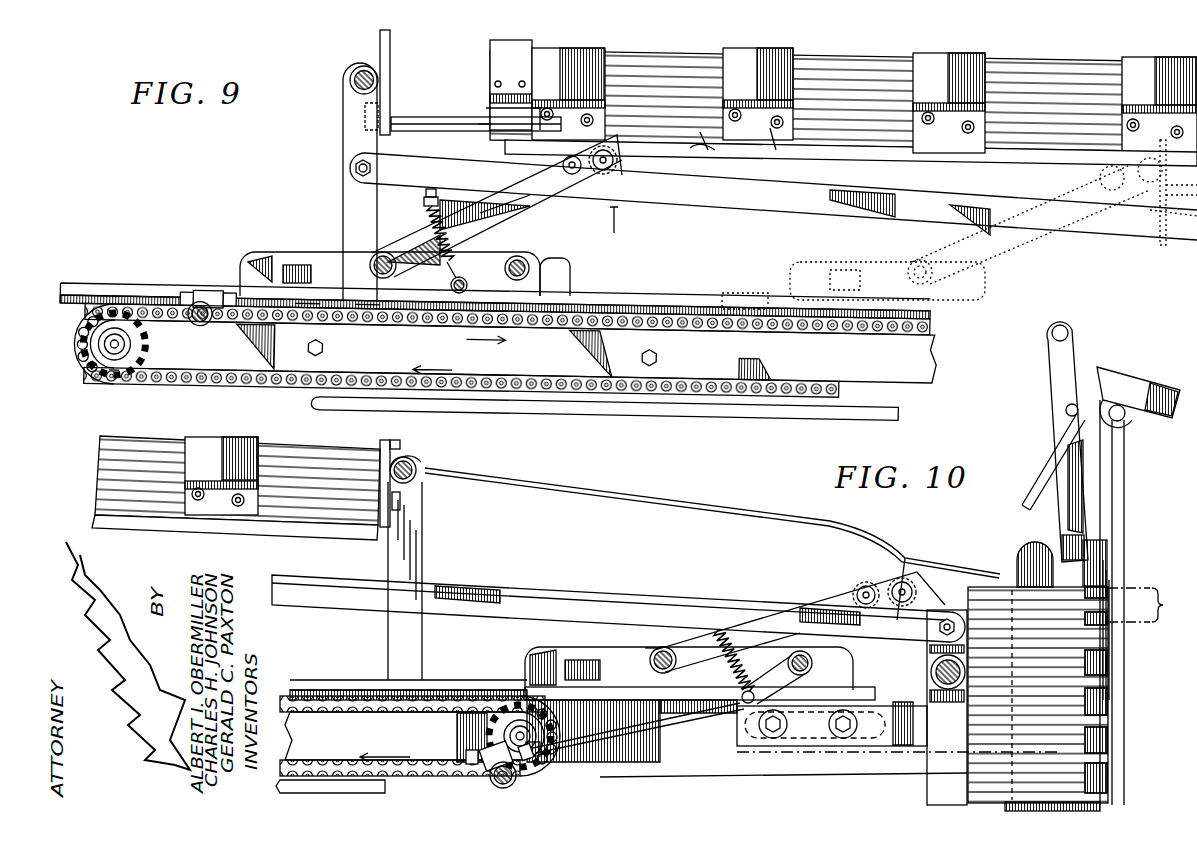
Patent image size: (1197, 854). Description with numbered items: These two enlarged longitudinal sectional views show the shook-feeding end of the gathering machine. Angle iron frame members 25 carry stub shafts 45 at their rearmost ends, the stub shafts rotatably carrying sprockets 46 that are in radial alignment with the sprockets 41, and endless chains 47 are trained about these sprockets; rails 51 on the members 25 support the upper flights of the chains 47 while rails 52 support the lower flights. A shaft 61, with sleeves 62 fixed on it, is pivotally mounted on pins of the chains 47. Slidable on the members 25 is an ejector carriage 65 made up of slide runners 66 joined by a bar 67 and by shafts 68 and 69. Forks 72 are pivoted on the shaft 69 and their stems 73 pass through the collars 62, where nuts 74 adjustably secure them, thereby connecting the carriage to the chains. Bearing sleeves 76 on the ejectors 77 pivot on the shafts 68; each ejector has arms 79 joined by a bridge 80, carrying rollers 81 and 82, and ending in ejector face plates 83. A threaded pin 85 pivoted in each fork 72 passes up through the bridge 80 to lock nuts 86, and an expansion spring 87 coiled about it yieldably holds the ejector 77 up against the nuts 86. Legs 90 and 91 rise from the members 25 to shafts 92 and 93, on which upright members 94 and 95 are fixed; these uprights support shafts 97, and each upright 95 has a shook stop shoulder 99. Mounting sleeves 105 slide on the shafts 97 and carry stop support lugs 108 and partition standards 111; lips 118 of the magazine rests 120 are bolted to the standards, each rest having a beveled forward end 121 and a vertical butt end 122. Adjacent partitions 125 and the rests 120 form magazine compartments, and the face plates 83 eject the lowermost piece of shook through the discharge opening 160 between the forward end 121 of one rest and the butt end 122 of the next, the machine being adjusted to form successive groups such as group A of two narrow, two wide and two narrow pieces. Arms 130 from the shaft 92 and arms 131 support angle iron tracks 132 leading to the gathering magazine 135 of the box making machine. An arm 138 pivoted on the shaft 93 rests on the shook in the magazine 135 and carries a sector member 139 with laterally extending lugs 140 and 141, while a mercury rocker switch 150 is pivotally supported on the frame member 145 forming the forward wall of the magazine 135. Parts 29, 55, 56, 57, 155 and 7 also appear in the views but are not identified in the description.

In FIG. 9, the angle iron frame members 25 is at (650, 297).
In FIG. 10, the angle iron frame members 25 is at (645, 774).
In FIG. 10, the pivot shaft 29 is at (930, 672).
In FIG. 10, the sprockets 41 is at (512, 722).
In FIG. 9, the stub shafts 45 is at (117, 330).
In FIG. 9, the sprockets 46 is at (117, 370).
In FIG. 10, the endless chains 47 is at (443, 700).
In FIG. 9, the rails 51 is at (895, 344).
In FIG. 10, the rails 51 is at (312, 720).
In FIG. 9, the rails 52 is at (898, 400).
In FIG. 10, the rails 52 is at (362, 788).
In FIG. 10, the mounting plate 55 is at (896, 743).
In FIG. 10, the bolt 56 is at (770, 740).
In FIG. 10, the bolt 57 is at (803, 730).
In FIG. 9, the shaft 61 is at (205, 326).
In FIG. 10, the shaft 61 is at (506, 789).
In FIG. 9, the sleeves 62 is at (211, 289).
In FIG. 10, the sleeves 62 is at (485, 752).
In FIG. 9, the ejector carriage 65 is at (276, 242).
In FIG. 10, the ejector carriage 65 is at (519, 643).
In FIG. 9, the slide runners 66 is at (572, 276).
In FIG. 9, the bar 67 is at (298, 264).
In FIG. 10, the bar 67 is at (578, 659).
In FIG. 9, the shafts 68 is at (367, 302).
In FIG. 10, the shafts 68 is at (665, 647).
In FIG. 9, the shaft 69 is at (532, 270).
In FIG. 10, the shaft 69 is at (813, 662).
In FIG. 9, the forks 72 is at (304, 302).
In FIG. 10, the forks 72 is at (700, 702).
In FIG. 9, the stems 73 is at (343, 298).
In FIG. 10, the stems 73 is at (668, 714).
In FIG. 9, the nuts 74 is at (185, 290).
In FIG. 10, the nuts 74 is at (480, 768).
In FIG. 9, the bearing sleeves 76 is at (374, 258).
In FIG. 10, the bearing sleeves 76 is at (655, 651).
In FIG. 9, the ejectors 77 is at (527, 220).
In FIG. 10, the ejectors 77 is at (846, 585).
In FIG. 9, the arms 79 is at (512, 203).
In FIG. 9, the bridge 80 is at (432, 220).
In FIG. 9, the rollers 81 is at (565, 169).
In FIG. 10, the rollers 81 is at (866, 586).
In FIG. 9, the rollers 82 is at (589, 153).
In FIG. 10, the rollers 82 is at (904, 581).
In FIG. 9, the ejector face plate 83 is at (616, 222).
In FIG. 10, the ejector face plate 83 is at (925, 570).
In FIG. 9, the threaded pin 85 is at (433, 196).
In FIG. 10, the threaded pin 85 is at (717, 643).
In FIG. 9, the lock nuts 86 is at (424, 203).
In FIG. 9, the expansion spring 87 is at (463, 280).
In FIG. 10, the expansion spring 87 is at (757, 652).
In FIG. 9, the legs 90 is at (343, 127).
In FIG. 10, the legs 91 is at (416, 556).
In FIG. 9, the shaft 92 is at (351, 77).
In FIG. 10, the shaft 93 is at (418, 466).
In FIG. 9, the upright members 94 is at (380, 43).
In FIG. 10, the upright members 95 is at (380, 443).
In FIG. 9, the shafts 97 is at (404, 116).
In FIG. 10, the shook stop shoulder 99 is at (402, 501).
In FIG. 9, the mounting sleeves 105 is at (483, 126).
In FIG. 9, the stop support lug 108 is at (507, 127).
In FIG. 9, the partition standard 111 is at (770, 140).
In FIG. 9, the lips 118 is at (562, 102).
In FIG. 9, the magazine rest 120 is at (845, 153).
In FIG. 10, the magazine rest 120 is at (288, 528).
In FIG. 9, the lower end 121 is at (705, 150).
In FIG. 9, the butt end 122 is at (742, 128).
In FIG. 9, the partitions 125 is at (730, 62).
In FIG. 9, the arms 130 is at (356, 148).
In FIG. 10, the arms 131 is at (947, 619).
In FIG. 9, the angle iron tracks 132 is at (886, 212).
In FIG. 10, the angle iron tracks 132 is at (553, 591).
In FIG. 10, the gathering magazine 135 is at (1100, 675).
In FIG. 10, the arm 138 is at (740, 511).
In FIG. 10, the sector member 139 is at (1062, 522).
In FIG. 10, the lug 140 is at (1066, 412).
In FIG. 10, the lug 141 is at (1052, 338).
In FIG. 10, the frame member 145 is at (1125, 461).
In FIG. 10, the mercury rocker switch 150 is at (1125, 384).
In FIG. 9, the block 155 is at (490, 49).
In FIG. 9, the discharge opening 160 is at (700, 150).
In FIG. 9, the lever 7 is at (1172, 178).
In FIG. 10, the group of shook A is at (1145, 605).